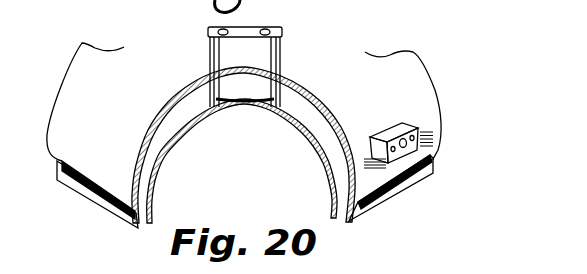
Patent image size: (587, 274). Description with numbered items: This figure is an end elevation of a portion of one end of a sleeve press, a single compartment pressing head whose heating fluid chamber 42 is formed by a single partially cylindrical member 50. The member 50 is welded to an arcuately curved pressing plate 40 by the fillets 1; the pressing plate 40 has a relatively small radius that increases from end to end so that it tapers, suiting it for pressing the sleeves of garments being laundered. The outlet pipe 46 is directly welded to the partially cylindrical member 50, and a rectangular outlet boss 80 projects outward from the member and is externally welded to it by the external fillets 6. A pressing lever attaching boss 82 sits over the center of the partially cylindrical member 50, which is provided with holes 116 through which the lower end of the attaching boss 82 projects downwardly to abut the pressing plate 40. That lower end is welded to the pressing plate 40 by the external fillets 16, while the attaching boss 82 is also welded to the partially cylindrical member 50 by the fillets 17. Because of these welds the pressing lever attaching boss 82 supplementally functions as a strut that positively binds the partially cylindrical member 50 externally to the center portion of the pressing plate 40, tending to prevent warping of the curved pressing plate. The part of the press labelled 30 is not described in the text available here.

The partially cylindrical member 50 is at (168, 100).
The fillets 17 is at (212, 74).
The pressing lever attaching bosses 82 is at (281, 33).
The holes 116 is at (282, 72).
The heating fluid chamber 42 is at (302, 90).
The external fillets 16 is at (252, 105).
The right housing half 30 is at (453, 60).
The outlet pipe 46 is at (418, 127).
The outlet boss 80 is at (431, 149).
The external fillets 6 is at (397, 126).
The pressing plate 40 is at (403, 181).
The fillets 1 is at (133, 217).